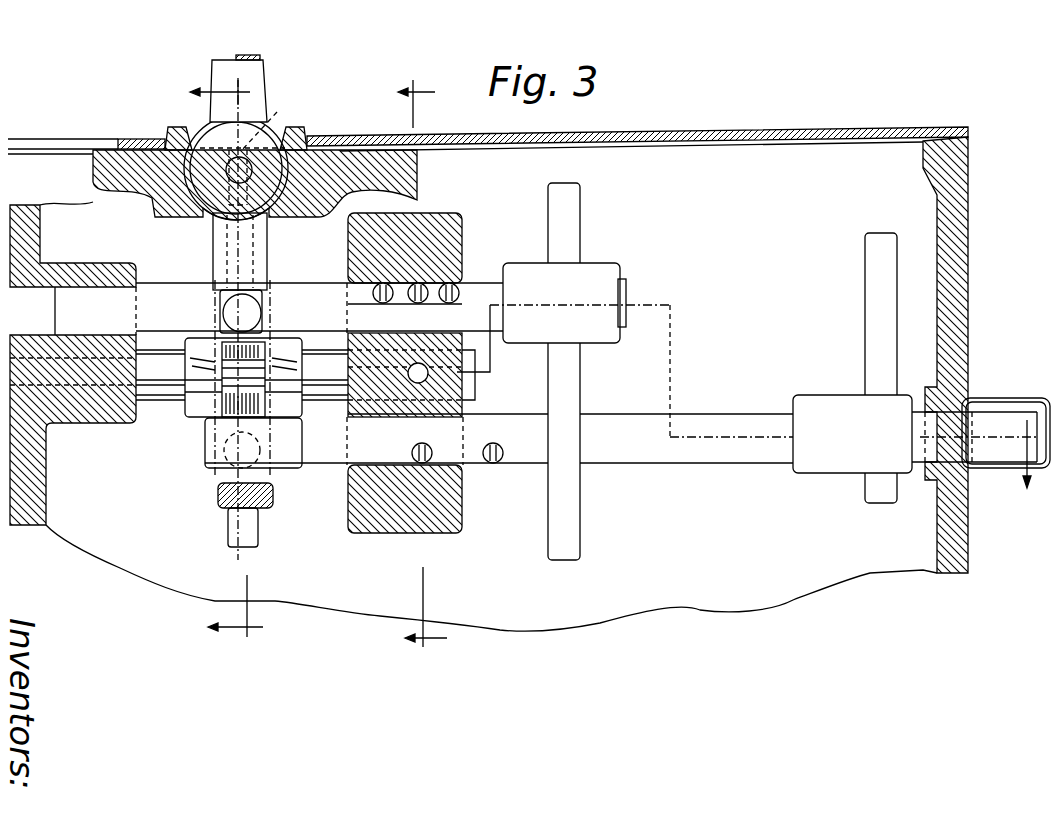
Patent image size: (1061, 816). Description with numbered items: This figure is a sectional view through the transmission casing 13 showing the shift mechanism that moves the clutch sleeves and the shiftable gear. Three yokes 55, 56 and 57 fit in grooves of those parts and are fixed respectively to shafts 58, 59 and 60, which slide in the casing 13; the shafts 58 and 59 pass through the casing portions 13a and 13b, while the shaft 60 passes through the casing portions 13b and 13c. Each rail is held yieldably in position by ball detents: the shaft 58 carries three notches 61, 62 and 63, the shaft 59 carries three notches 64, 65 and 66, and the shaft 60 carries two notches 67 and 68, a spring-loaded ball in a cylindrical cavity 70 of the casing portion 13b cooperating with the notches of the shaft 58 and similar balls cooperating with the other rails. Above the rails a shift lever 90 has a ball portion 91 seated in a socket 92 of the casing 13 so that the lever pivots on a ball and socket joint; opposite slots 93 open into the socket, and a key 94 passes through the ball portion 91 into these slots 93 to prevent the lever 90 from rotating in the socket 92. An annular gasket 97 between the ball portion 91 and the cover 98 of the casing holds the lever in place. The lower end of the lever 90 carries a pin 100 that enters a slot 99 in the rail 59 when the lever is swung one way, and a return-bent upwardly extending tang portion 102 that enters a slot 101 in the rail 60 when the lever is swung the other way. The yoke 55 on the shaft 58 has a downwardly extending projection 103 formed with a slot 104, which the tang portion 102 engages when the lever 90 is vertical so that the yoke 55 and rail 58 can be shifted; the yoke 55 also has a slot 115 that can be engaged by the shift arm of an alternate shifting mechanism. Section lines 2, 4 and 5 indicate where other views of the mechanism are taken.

The section line 2- 2 is at (1006, 453).
The section line 4- 4 is at (215, 359).
The section line 5- 5 is at (413, 365).
The transmission casing 13 is at (47, 475).
The casing portion 13a is at (108, 262).
The casing portion 13b is at (452, 213).
The casing portion 13c is at (927, 388).
The yoke 55 is at (260, 262).
The yoke 56 is at (600, 268).
The yoke 57 is at (870, 484).
The shaft 58 is at (242, 375).
The shaft 59 is at (163, 291).
The shaft 60 is at (627, 416).
The notch 61 is at (348, 370).
The notch 62 is at (411, 386).
The notch 63 is at (478, 381).
The notch 64 is at (372, 294).
The notch 65 is at (421, 284).
The notch 66 is at (453, 283).
The notch 67 is at (432, 446).
The notch 68 is at (498, 444).
The cylindrical cavity 70 is at (420, 383).
The shift lever 90 is at (262, 66).
The ball portion 91 is at (270, 124).
The socket 92 is at (192, 212).
The slots 93 is at (244, 152).
The key 94 is at (227, 169).
The annular gasket 97 is at (173, 131).
The cover 98 is at (130, 139).
The slot 99 is at (220, 300).
The pin 100 is at (252, 268).
The slot 101 is at (226, 475).
The tang portion 102 is at (262, 477).
The projection 103 is at (190, 438).
The slot 104 is at (256, 422).
The slot 115 is at (258, 352).